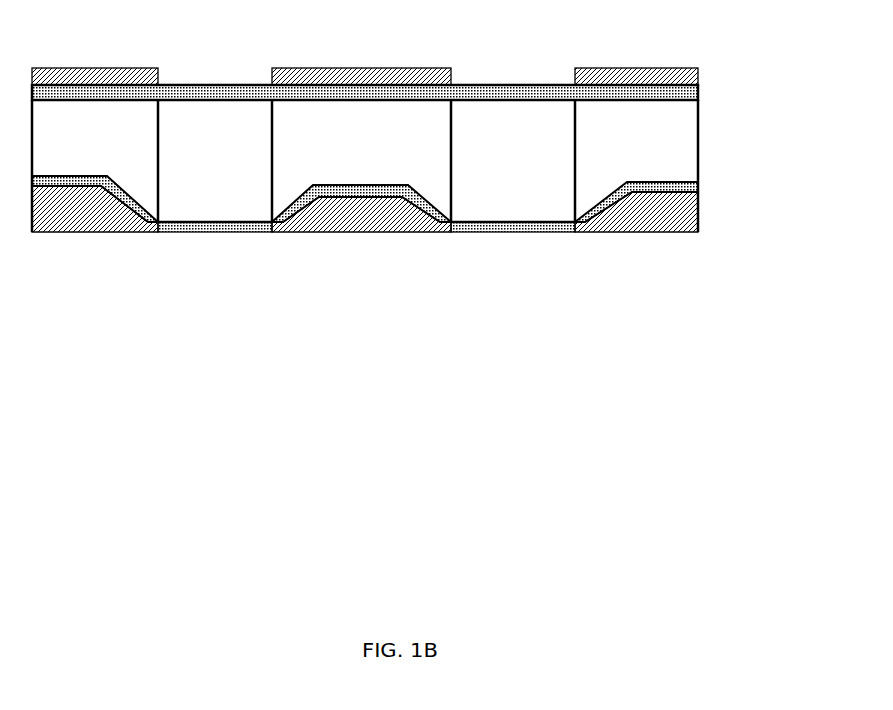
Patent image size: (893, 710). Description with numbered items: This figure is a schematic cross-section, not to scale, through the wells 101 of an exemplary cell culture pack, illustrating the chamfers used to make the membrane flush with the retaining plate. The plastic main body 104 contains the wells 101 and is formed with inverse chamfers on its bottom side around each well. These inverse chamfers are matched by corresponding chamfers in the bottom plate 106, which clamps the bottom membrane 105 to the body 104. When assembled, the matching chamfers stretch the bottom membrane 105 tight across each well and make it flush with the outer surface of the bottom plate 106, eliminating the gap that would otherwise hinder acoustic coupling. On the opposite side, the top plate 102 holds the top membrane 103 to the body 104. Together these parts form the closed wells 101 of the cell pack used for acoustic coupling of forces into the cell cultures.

The wells 101 is at (366, 185).
The top plate 102 is at (605, 62).
The top membrane 103 is at (698, 93).
The plastic main body 104 is at (365, 166).
The bottom membrane 105 is at (698, 188).
The bottom plate 106 is at (632, 238).